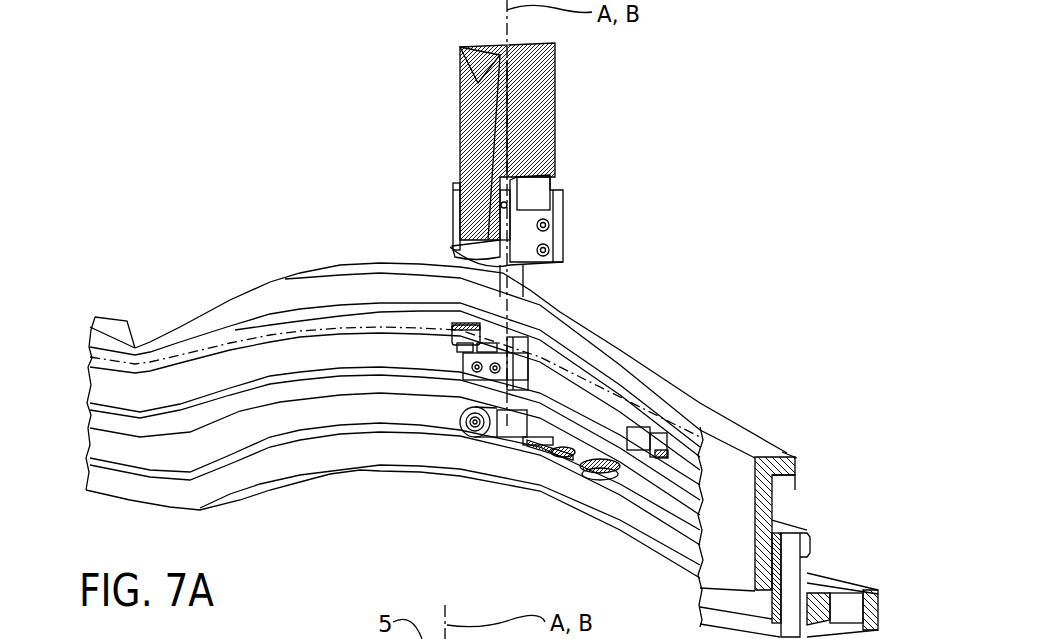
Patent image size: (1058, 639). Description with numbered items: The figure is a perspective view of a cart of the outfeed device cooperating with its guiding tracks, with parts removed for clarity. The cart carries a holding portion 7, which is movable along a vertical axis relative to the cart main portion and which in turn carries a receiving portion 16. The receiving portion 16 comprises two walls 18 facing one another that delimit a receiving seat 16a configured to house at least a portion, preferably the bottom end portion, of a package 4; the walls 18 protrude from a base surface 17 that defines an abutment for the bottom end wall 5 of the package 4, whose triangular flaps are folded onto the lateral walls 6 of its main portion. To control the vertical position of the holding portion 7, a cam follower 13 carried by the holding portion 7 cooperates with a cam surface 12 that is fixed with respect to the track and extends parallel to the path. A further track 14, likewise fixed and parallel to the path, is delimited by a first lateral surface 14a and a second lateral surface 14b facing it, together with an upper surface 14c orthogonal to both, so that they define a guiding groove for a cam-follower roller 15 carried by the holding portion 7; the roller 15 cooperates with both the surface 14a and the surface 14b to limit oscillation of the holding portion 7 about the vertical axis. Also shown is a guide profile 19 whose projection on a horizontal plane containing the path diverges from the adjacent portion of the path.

The package 4 is at (540, 125).
The bottom end wall 5 is at (488, 44).
The lateral wall 6 is at (537, 88).
The holding portion 7 is at (460, 366).
The cam surface 12 is at (634, 498).
The cam follower 13 is at (492, 433).
The further track 14 is at (358, 327).
The first lateral surface 14a is at (789, 484).
The second lateral surface 14b is at (780, 496).
The upper surface 14c is at (784, 473).
The cam-follower roller 15 is at (456, 322).
The receiving portion 16 is at (560, 275).
The receiving seat 16a is at (498, 203).
The base surface 17 is at (455, 263).
The walls 18 is at (455, 204).
The guide profile 19 is at (843, 613).